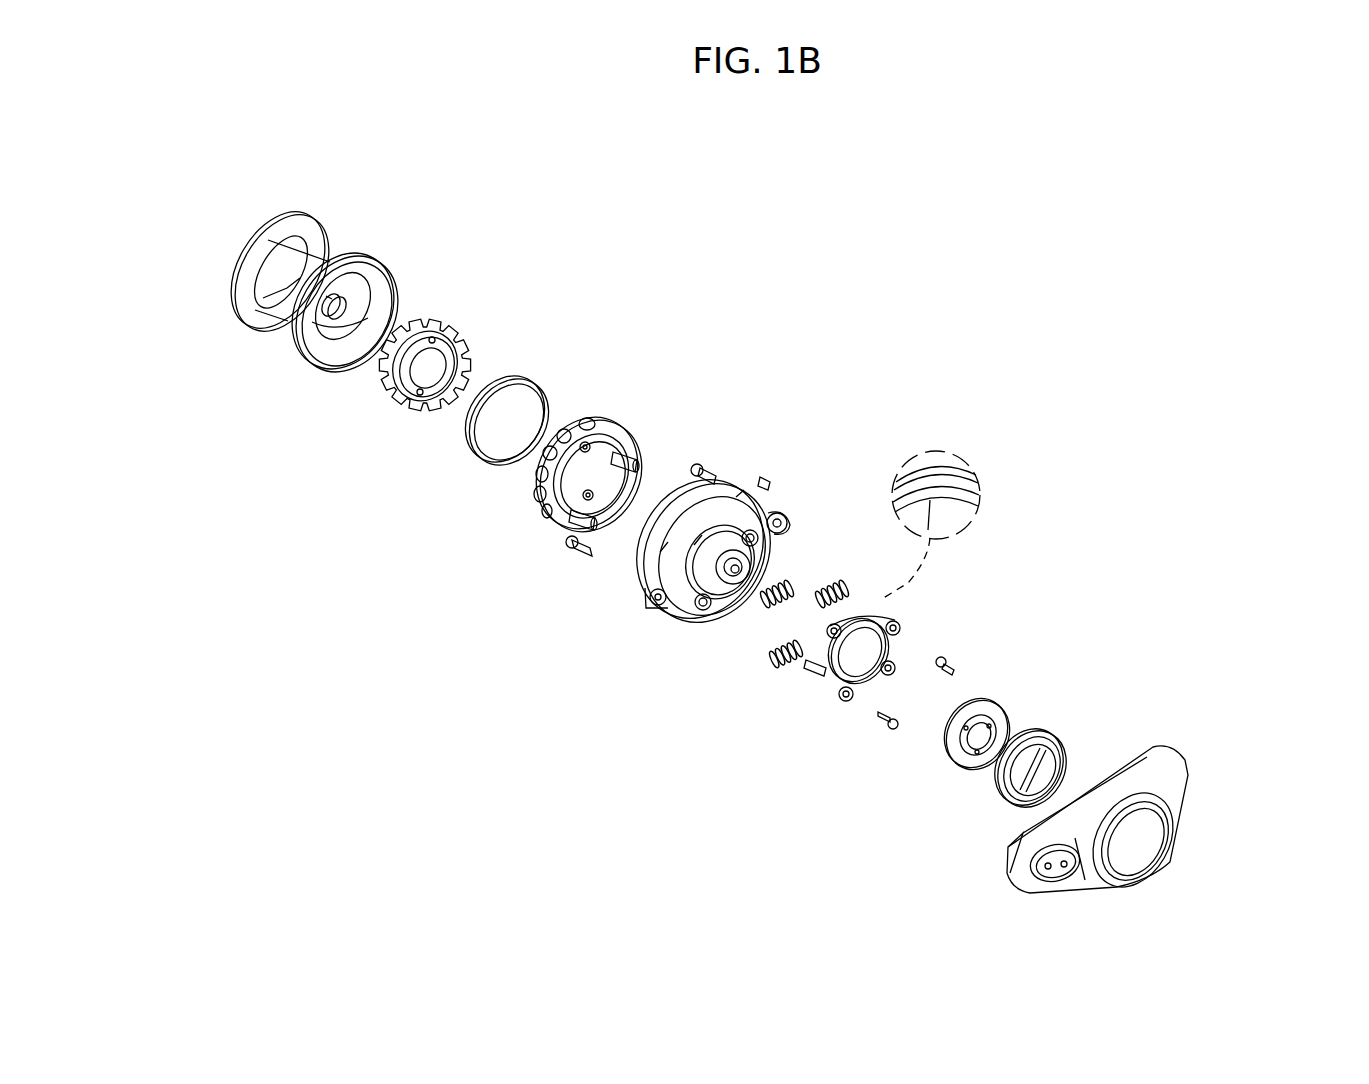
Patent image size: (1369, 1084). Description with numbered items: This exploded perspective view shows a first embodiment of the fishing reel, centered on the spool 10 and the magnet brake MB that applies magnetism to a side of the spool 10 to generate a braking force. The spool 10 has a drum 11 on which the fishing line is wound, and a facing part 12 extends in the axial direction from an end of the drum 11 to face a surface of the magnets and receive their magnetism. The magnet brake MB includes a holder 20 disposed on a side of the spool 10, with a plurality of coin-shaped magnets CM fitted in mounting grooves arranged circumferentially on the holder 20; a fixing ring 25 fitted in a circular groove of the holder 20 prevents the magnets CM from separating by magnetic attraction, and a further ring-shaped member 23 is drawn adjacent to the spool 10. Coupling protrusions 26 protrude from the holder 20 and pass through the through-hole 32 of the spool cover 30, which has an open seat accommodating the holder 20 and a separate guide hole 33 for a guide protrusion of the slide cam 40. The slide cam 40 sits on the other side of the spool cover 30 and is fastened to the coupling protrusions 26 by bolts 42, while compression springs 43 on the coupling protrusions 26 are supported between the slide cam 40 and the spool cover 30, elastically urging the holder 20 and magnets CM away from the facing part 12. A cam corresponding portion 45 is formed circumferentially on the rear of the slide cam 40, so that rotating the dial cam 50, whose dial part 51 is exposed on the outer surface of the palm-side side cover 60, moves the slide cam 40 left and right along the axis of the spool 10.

The spool 10 is at (354, 191).
The drum 11 is at (268, 318).
The facing part 12 is at (341, 362).
The ratchet gear 23 is at (417, 393).
The fixing ring 25 is at (468, 444).
The magnet brake MB is at (602, 394).
The holder 20 is at (579, 477).
The coin-shaped magnets CM is at (535, 477).
The coupling protrusions 26 is at (638, 456).
The spool cover 30 is at (683, 571).
The through-hole 32 is at (762, 512).
The guide hole 33 is at (690, 620).
The slide cam 40 is at (866, 622).
The bolts 42 is at (883, 730).
The compression springs 43 is at (781, 666).
The cam corresponding portion 45 is at (948, 482).
The dial cam 50 is at (962, 762).
The dial part 51 is at (1008, 802).
The palm-side side cover 60 is at (1076, 890).